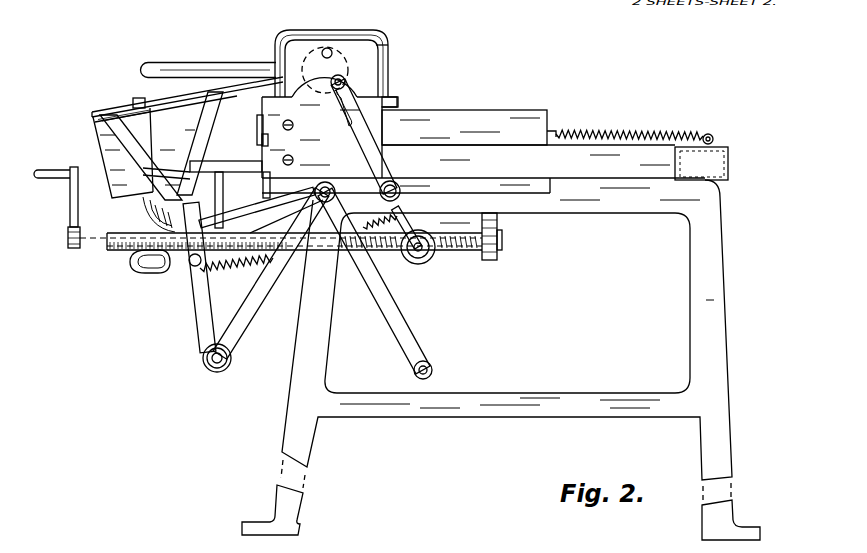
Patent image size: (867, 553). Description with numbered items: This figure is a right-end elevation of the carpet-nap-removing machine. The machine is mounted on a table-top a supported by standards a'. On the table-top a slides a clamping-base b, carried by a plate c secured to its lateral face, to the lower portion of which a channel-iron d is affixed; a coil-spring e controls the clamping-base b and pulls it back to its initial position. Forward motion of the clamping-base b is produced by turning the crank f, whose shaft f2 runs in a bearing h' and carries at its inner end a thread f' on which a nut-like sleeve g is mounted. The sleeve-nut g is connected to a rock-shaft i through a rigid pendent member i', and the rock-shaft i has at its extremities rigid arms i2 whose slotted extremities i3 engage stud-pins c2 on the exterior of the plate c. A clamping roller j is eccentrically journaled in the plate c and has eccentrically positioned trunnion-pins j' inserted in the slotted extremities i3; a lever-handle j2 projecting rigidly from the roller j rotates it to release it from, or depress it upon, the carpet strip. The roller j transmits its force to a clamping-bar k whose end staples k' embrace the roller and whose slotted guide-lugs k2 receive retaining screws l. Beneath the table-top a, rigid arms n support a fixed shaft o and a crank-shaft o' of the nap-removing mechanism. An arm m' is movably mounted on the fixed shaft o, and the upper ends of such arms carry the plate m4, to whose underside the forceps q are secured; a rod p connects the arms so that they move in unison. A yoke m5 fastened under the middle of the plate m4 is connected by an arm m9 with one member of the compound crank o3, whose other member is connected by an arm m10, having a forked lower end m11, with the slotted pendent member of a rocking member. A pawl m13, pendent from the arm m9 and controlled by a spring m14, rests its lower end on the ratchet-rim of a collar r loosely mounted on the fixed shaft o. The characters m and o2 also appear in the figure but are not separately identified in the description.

The table-top a is at (701, 163).
The standards a' is at (501, 360).
The clamping-base b is at (464, 127).
The plate c is at (385, 115).
The stud-pins c2 is at (345, 80).
The channel-iron d is at (483, 169).
The coil-spring e is at (630, 127).
The crank f is at (57, 207).
The thread f' is at (408, 258).
The shaft f2 is at (118, 251).
The nut-like sleeve g is at (420, 266).
The bearing h' is at (503, 236).
The rock-shaft i is at (369, 140).
The pendent member i' is at (409, 227).
The arm i2 is at (352, 128).
The slotted extremity i3 is at (345, 80).
The clamping roller j is at (331, 54).
The trunnion-pin j' is at (327, 47).
The lever-handle j2 is at (209, 57).
The clamping-bar k is at (407, 85).
The staple k' is at (398, 31).
The slotted guide-lug k2 is at (262, 140).
The retaining screw l is at (257, 118).
The plate m is at (169, 150).
The arm m' is at (142, 157).
The plate m4 is at (139, 98).
The yoke m5 is at (104, 150).
The arm m9 is at (228, 161).
The arm m10 is at (225, 200).
The forked lower end m11 is at (146, 270).
The pawl m13 is at (195, 333).
The spring m14 is at (232, 267).
The rigid arm n is at (271, 273).
The fixed shaft o is at (232, 358).
The crank-shaft o' is at (300, 201).
The arm o2 is at (412, 338).
The compound crank o3 is at (262, 204).
The rod p is at (190, 265).
The forceps q is at (247, 80).
The ratchet-rimmed collar r is at (214, 372).